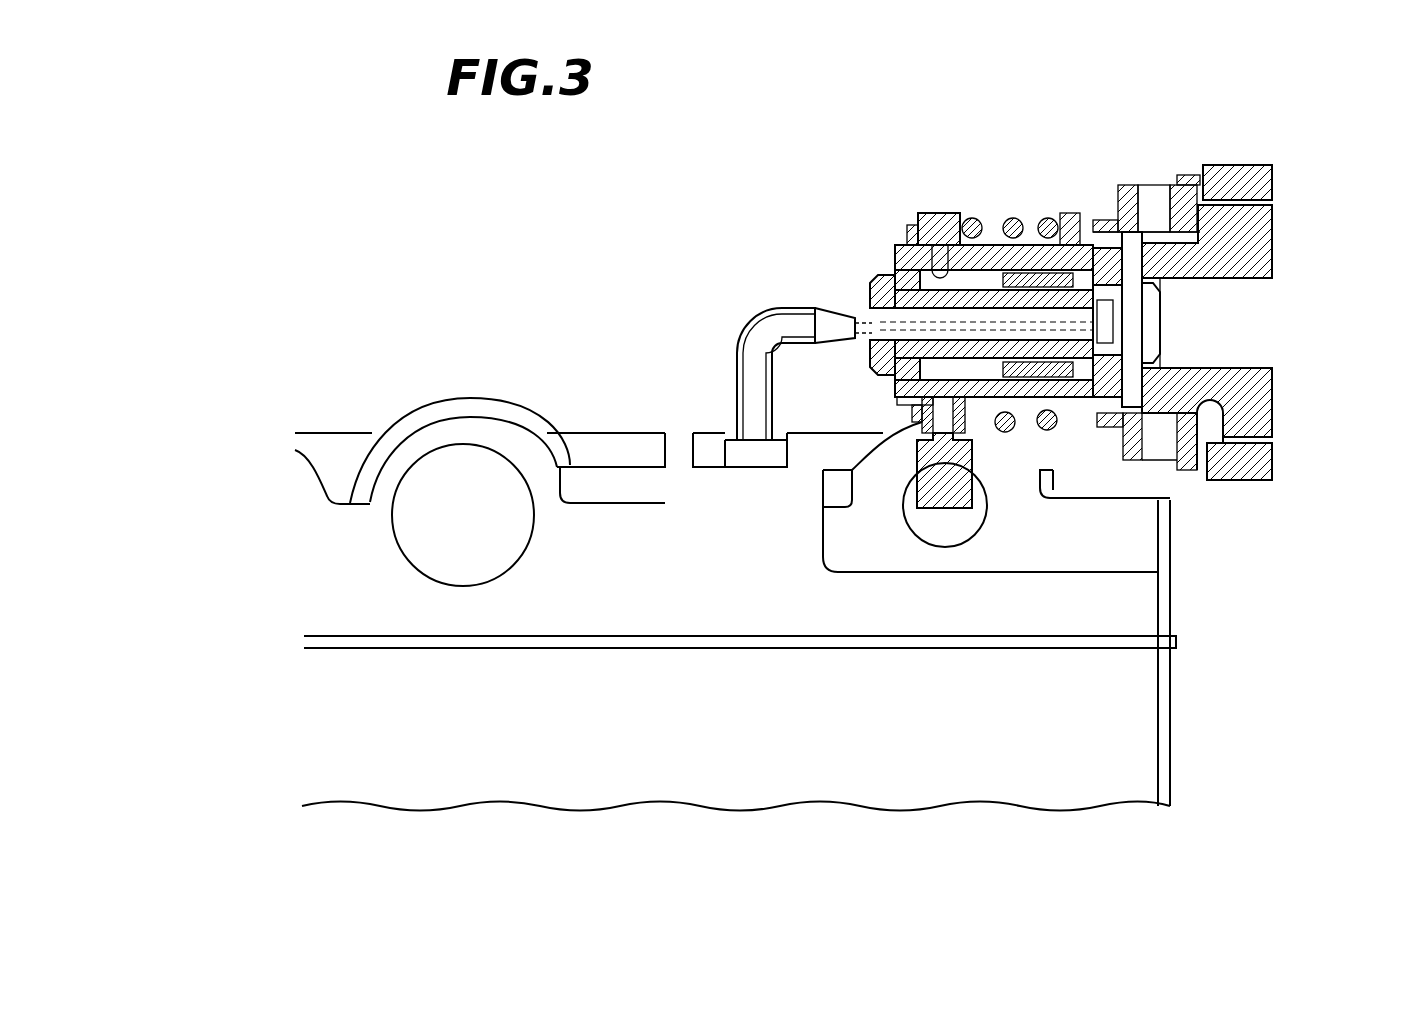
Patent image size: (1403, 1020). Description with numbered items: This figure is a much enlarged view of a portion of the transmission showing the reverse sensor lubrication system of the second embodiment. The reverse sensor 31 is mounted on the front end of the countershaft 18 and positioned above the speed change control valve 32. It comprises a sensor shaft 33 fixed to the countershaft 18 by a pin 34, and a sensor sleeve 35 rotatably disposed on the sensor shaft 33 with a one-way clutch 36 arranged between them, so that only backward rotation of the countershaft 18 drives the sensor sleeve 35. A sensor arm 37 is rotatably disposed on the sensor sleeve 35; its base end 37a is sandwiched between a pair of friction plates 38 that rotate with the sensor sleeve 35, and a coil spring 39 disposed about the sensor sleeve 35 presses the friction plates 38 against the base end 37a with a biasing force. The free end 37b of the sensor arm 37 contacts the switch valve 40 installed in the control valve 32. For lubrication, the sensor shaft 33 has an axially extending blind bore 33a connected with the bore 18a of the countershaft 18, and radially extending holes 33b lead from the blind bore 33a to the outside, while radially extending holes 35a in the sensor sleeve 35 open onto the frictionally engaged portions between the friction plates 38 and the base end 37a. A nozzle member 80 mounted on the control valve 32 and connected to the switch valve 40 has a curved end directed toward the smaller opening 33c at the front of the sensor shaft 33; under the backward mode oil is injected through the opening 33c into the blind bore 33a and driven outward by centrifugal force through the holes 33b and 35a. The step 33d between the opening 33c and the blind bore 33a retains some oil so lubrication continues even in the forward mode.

The countershaft 18 is at (1262, 322).
The bore of the countershaft 18a is at (1230, 283).
The reverse sensor 31 is at (840, 299).
The speed change control valve 32 is at (758, 598).
The sensor shaft 33 is at (1070, 266).
The blind bore 33a is at (1147, 313).
The radially extending holes 33b is at (1036, 362).
The opening 33c is at (867, 333).
The step 33d is at (902, 258).
The pin 34 is at (1135, 360).
The sensor sleeve 35 is at (1080, 430).
The radially extending holes 35a is at (948, 240).
The one-way clutch 36 is at (1007, 432).
The sensor arm 37 is at (925, 178).
The base end 37a is at (948, 277).
The free end 37b is at (973, 465).
The friction plates 38 is at (915, 473).
The coil spring 39 is at (1053, 440).
The switch valve 40 is at (925, 547).
The nozzle member 80 is at (738, 348).